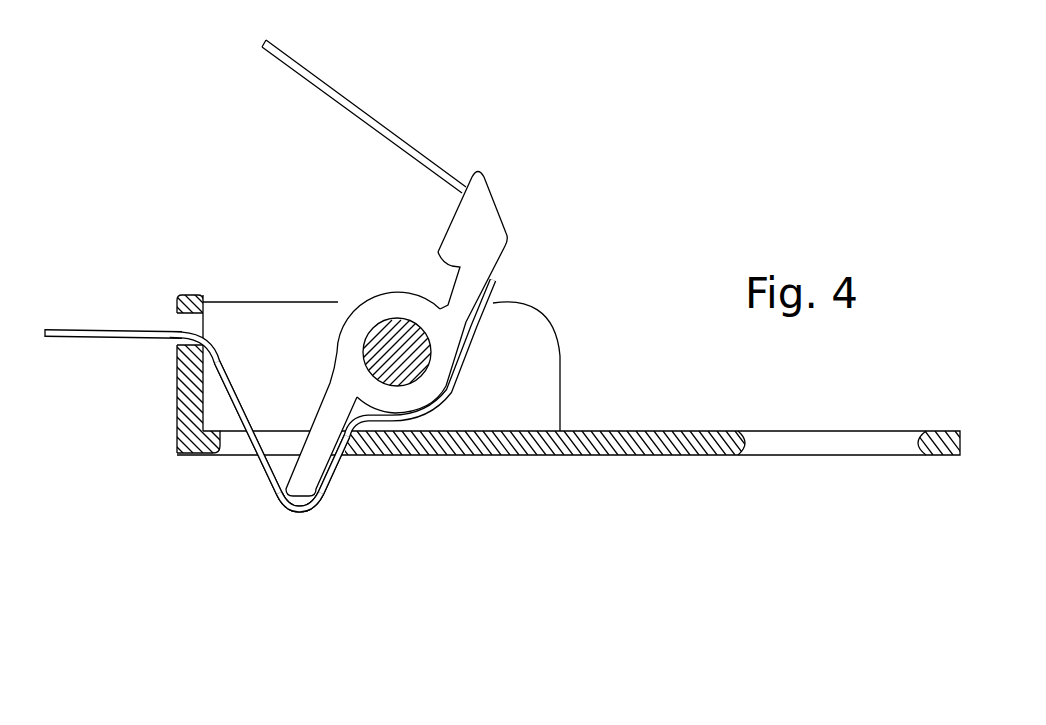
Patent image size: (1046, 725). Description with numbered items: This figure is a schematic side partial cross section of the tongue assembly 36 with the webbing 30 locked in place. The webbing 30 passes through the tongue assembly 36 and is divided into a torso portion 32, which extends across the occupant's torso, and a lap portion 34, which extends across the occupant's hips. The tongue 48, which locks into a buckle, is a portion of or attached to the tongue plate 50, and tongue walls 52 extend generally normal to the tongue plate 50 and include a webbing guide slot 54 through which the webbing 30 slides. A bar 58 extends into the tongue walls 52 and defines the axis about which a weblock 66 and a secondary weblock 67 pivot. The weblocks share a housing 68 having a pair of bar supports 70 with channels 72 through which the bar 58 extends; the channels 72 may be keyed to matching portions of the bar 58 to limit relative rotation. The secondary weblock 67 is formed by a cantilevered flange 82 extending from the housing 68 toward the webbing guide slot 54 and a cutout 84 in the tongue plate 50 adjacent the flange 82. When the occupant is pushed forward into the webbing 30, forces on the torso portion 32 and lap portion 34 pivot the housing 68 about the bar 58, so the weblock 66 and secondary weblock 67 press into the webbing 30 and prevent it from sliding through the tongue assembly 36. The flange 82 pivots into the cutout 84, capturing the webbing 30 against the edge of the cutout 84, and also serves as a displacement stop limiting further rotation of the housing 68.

The webbing 30 is at (331, 433).
The torso portion 32 is at (330, 86).
The lap portion 34 is at (73, 338).
The tongue assembly 36 is at (556, 190).
The tongue 48 is at (939, 456).
The tongue plate 50 is at (575, 468).
The tongue walls 52 is at (560, 360).
The webbing guide slot 54 is at (215, 405).
The bar 58 is at (362, 344).
The weblock 66 is at (446, 297).
The secondary weblock 67 is at (292, 522).
The housing 68 is at (507, 242).
The bar supports 70 is at (391, 292).
The channels 72 is at (345, 384).
The cantilevered flange 82 is at (267, 474).
The cutout 84 is at (226, 448).